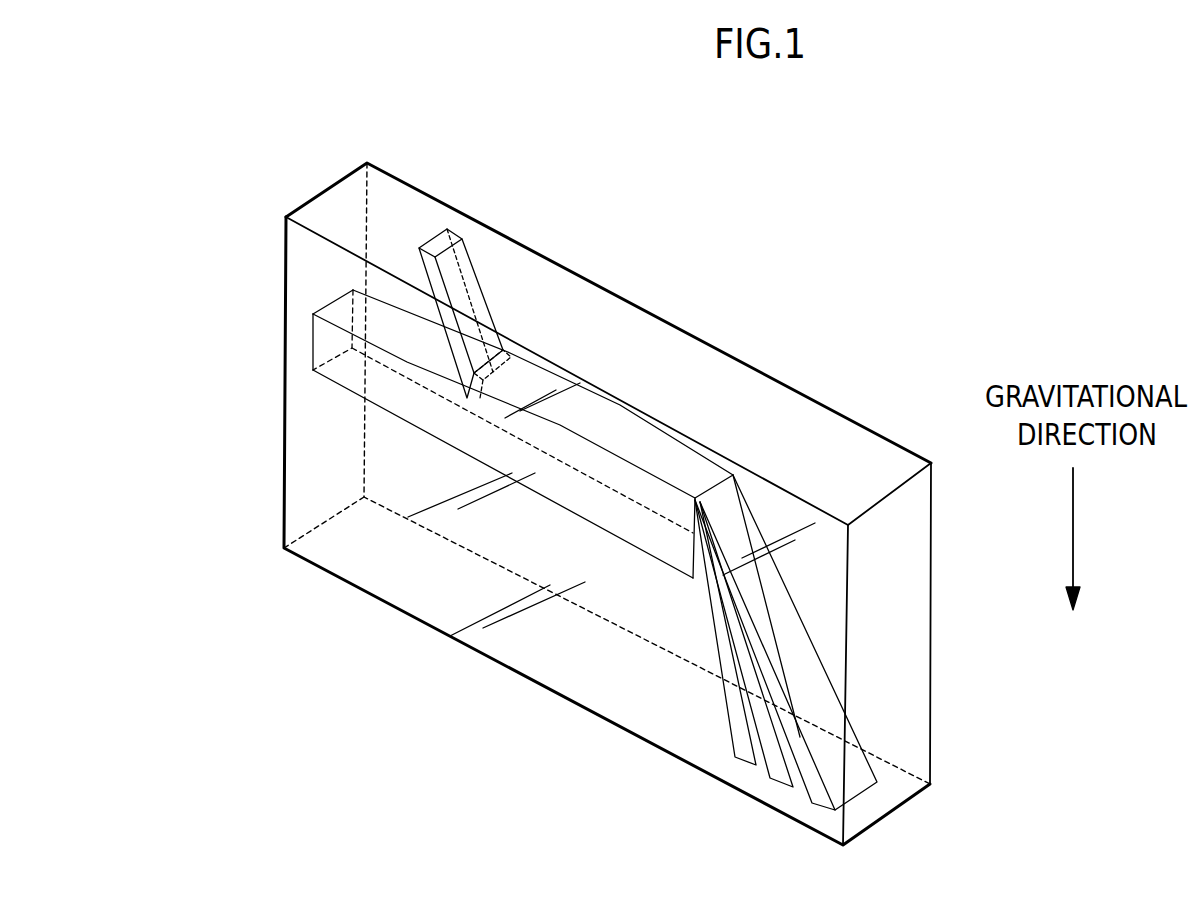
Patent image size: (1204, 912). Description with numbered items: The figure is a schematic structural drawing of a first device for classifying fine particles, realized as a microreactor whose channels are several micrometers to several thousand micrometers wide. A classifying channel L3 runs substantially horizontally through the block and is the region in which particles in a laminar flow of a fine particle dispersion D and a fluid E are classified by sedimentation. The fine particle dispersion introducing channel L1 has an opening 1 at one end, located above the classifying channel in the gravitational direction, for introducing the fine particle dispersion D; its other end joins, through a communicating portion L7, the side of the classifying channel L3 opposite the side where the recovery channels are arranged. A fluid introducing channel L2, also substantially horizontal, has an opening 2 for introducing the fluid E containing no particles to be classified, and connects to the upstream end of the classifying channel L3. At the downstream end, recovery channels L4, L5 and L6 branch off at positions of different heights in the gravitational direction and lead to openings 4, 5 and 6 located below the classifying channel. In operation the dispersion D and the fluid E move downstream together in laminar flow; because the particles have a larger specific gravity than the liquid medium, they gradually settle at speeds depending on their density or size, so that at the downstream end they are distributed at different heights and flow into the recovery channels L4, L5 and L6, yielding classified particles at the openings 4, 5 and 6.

The opening 1 is at (440, 245).
The opening 2 is at (333, 333).
The opening 4 is at (818, 806).
The opening 5 is at (783, 783).
The opening 6 is at (738, 763).
The fine particle dispersion introducing channel L1 is at (477, 302).
The fluid introducing channel L2 is at (362, 373).
The classifying channel L3 is at (578, 410).
The recovery channel L4 is at (803, 650).
The recovery channel L5 is at (760, 727).
The recovery channel L6 is at (717, 670).
The communicating portion L7 is at (525, 347).
The fine particle dispersion D is at (427, 188).
The fluid E is at (272, 285).